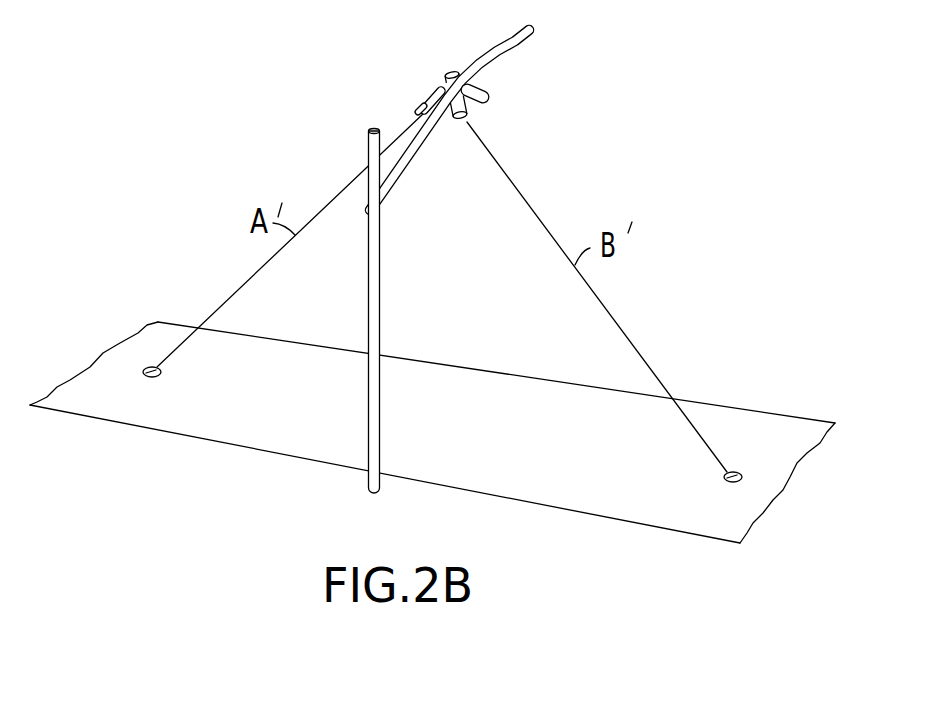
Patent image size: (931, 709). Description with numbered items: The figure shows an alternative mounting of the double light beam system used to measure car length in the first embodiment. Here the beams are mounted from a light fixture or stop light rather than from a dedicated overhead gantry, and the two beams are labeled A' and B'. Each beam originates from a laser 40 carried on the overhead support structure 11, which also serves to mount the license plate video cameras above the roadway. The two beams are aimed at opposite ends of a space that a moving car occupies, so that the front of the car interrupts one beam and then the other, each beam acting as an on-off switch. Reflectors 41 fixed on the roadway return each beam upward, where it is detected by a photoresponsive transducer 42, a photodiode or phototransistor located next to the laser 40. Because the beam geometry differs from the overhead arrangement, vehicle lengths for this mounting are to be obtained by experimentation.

The support structure 11 is at (375, 292).
The laser 40 is at (422, 107).
The reflector 41 is at (420, 111).
The photoresponsive transducer 42 is at (155, 378).